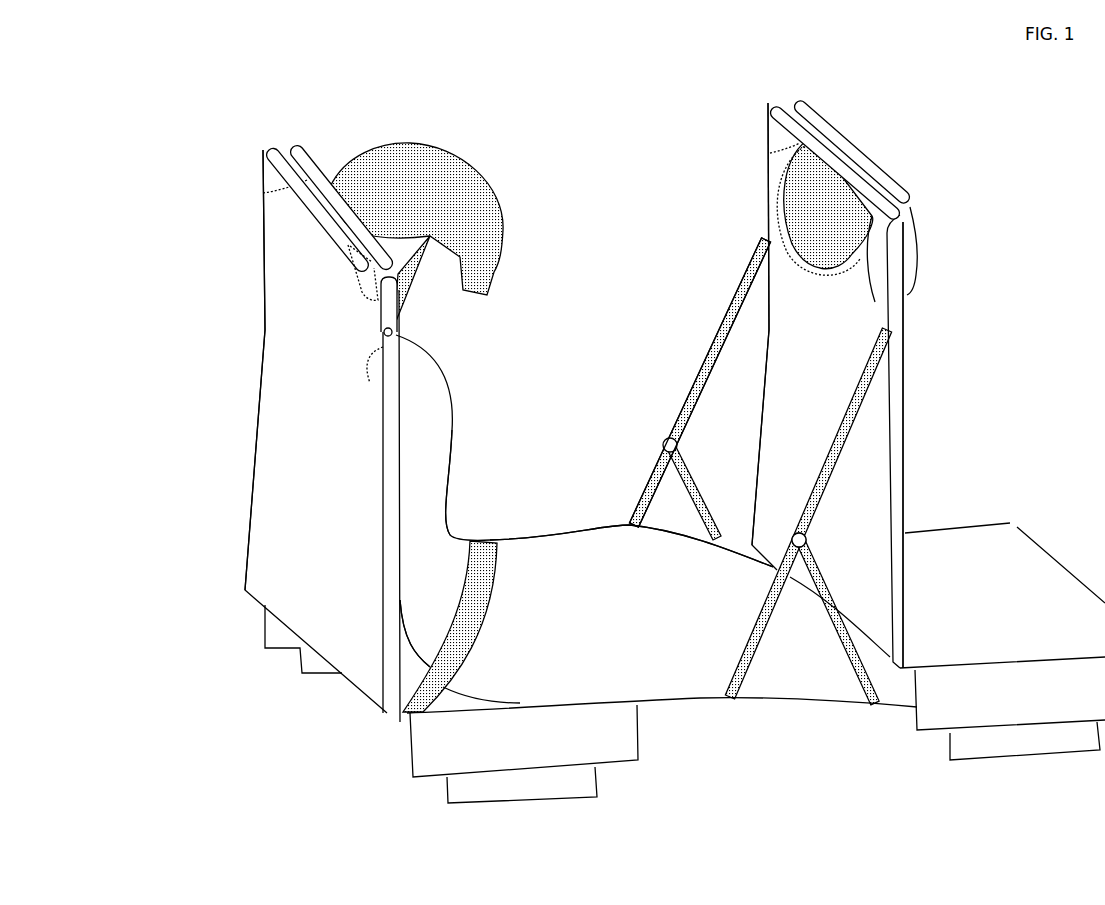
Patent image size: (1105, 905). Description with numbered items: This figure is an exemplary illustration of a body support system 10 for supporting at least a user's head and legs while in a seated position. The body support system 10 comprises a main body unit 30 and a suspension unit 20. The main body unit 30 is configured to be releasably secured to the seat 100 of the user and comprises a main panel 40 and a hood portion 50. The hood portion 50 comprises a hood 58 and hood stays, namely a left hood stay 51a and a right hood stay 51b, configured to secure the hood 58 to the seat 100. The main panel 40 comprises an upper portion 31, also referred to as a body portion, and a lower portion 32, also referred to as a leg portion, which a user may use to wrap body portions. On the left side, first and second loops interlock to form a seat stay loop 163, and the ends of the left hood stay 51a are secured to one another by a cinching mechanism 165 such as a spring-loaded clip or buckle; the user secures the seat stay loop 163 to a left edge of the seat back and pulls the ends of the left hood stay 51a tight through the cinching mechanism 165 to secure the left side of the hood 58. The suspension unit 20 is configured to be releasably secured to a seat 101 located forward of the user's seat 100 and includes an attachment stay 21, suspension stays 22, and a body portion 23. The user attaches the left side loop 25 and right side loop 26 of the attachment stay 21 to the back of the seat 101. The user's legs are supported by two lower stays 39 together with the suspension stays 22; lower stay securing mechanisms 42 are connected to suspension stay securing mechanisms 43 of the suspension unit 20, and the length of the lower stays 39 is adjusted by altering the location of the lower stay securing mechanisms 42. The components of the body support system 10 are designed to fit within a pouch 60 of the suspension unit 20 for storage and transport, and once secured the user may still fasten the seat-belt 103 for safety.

The body support system 10 is at (675, 405).
The suspension unit 20 is at (725, 188).
The attachment stay 21 is at (793, 137).
The suspension stays 22 is at (820, 455).
The body portion 23 is at (838, 167).
The left side loop 25 is at (778, 147).
The right side loop 26 is at (873, 262).
The main body unit 30 is at (493, 410).
The upper portion 31 is at (424, 616).
The lower portion 32 is at (631, 575).
The lower stay 39 is at (760, 610).
The main panel 40 is at (440, 478).
The lower stay securing mechanism 42 is at (800, 555).
The suspension stay securing mechanism 43 is at (808, 538).
The hood portion 50 is at (396, 125).
The left hood stay 51a is at (277, 180).
The right hood stay 51b is at (360, 306).
The hood 58 is at (470, 180).
The pouch 60 is at (895, 205).
The seat 100 is at (290, 370).
The seat 101 is at (800, 230).
The seat-belt 103 is at (492, 555).
The seat stay loop 163 is at (350, 293).
The cinching mechanism 165 is at (400, 330).